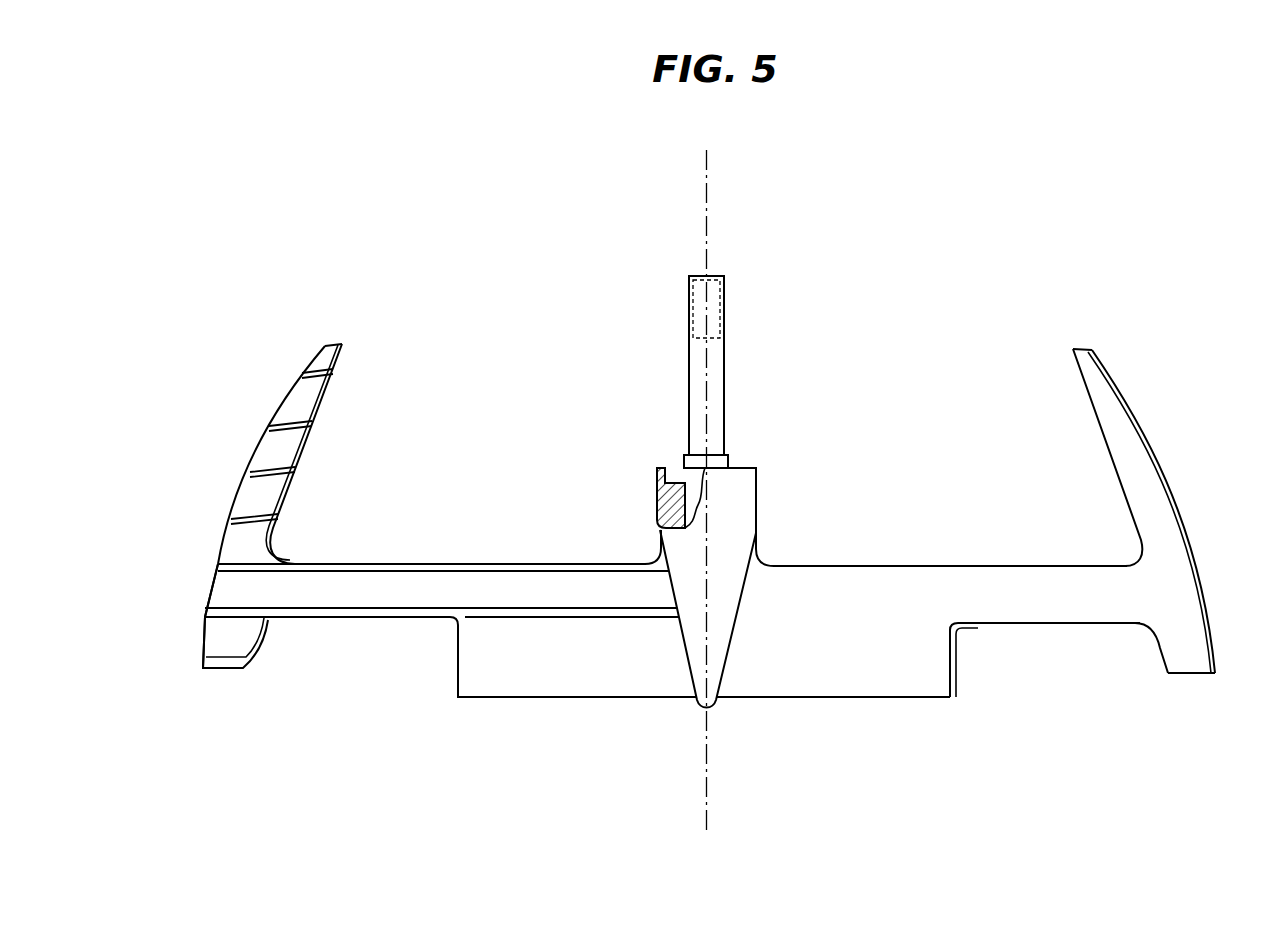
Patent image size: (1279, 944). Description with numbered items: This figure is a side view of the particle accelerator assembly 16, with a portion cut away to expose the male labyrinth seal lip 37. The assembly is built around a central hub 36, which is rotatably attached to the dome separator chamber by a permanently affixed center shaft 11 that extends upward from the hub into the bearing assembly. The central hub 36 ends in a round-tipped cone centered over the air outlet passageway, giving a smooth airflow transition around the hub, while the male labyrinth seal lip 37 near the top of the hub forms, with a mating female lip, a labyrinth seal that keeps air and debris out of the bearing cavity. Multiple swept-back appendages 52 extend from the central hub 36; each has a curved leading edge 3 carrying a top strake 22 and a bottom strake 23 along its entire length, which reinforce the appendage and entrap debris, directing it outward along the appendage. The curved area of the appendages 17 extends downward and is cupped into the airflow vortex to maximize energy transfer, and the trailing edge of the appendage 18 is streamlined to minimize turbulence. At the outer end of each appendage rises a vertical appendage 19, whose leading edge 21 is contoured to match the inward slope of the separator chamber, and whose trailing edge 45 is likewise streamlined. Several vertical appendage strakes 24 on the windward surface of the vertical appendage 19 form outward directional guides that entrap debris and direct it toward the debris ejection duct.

The curved appendage leading edge 3 is at (373, 582).
The center shaft 11 is at (718, 306).
The particle accelerator assembly 16 is at (771, 553).
The curved area of the appendages 17 is at (847, 666).
The trailing edge of the particle accelerator appendage 18 is at (1028, 629).
The vertical appendage 19 is at (277, 445).
The leading edge of the vertical appendage 21 is at (236, 491).
The top strake 22 is at (431, 558).
The bottom strake 23 is at (400, 624).
The vertical appendage strakes 24 is at (279, 516).
The central hub 36 is at (723, 645).
The male labyrinth seal lip 37 is at (663, 469).
The trailing edge of the vertical appendage 45 is at (1164, 587).
The swept-back appendage 52 is at (602, 579).